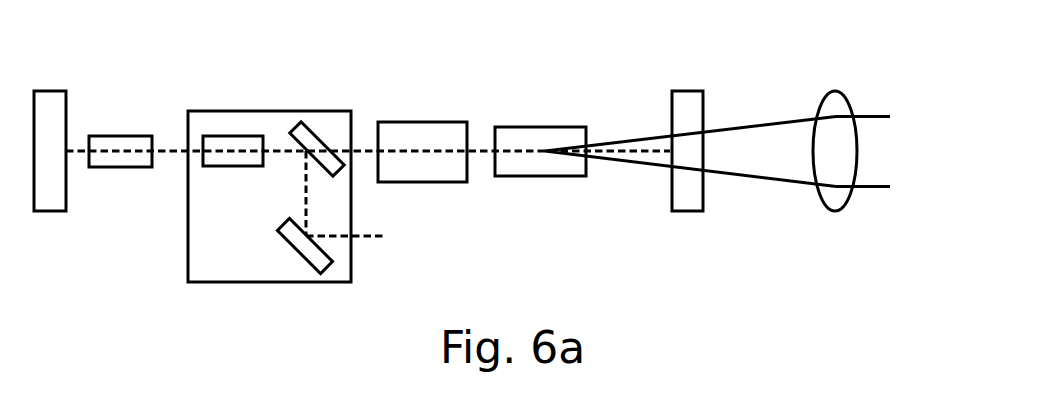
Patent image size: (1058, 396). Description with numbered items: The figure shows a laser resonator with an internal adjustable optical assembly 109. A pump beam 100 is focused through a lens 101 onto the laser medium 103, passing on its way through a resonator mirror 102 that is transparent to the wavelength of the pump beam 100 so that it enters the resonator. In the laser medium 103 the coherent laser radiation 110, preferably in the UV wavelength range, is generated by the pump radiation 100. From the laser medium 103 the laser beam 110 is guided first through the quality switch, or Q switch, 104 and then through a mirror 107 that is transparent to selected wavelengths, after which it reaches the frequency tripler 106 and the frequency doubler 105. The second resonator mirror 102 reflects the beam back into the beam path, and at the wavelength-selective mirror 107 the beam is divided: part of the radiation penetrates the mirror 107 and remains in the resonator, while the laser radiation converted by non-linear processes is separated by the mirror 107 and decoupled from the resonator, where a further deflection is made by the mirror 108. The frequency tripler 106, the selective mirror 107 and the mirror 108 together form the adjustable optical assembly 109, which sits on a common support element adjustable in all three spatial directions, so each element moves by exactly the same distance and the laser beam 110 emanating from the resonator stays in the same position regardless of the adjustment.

The pump beam 100 is at (734, 152).
The lens 101 is at (837, 121).
The resonator mirror 102 is at (369, 121).
The laser medium 103 is at (540, 103).
The quality switch (Q switch) 104 is at (422, 106).
The frequency doubler 105 is at (124, 99).
The frequency tripler 106 is at (233, 98).
The mirror transparent to selected wavelengths 107 is at (317, 103).
The mirror 108 is at (309, 279).
The adjustable optical assembly 109 is at (238, 226).
The coherent laser radiation 110 is at (368, 204).